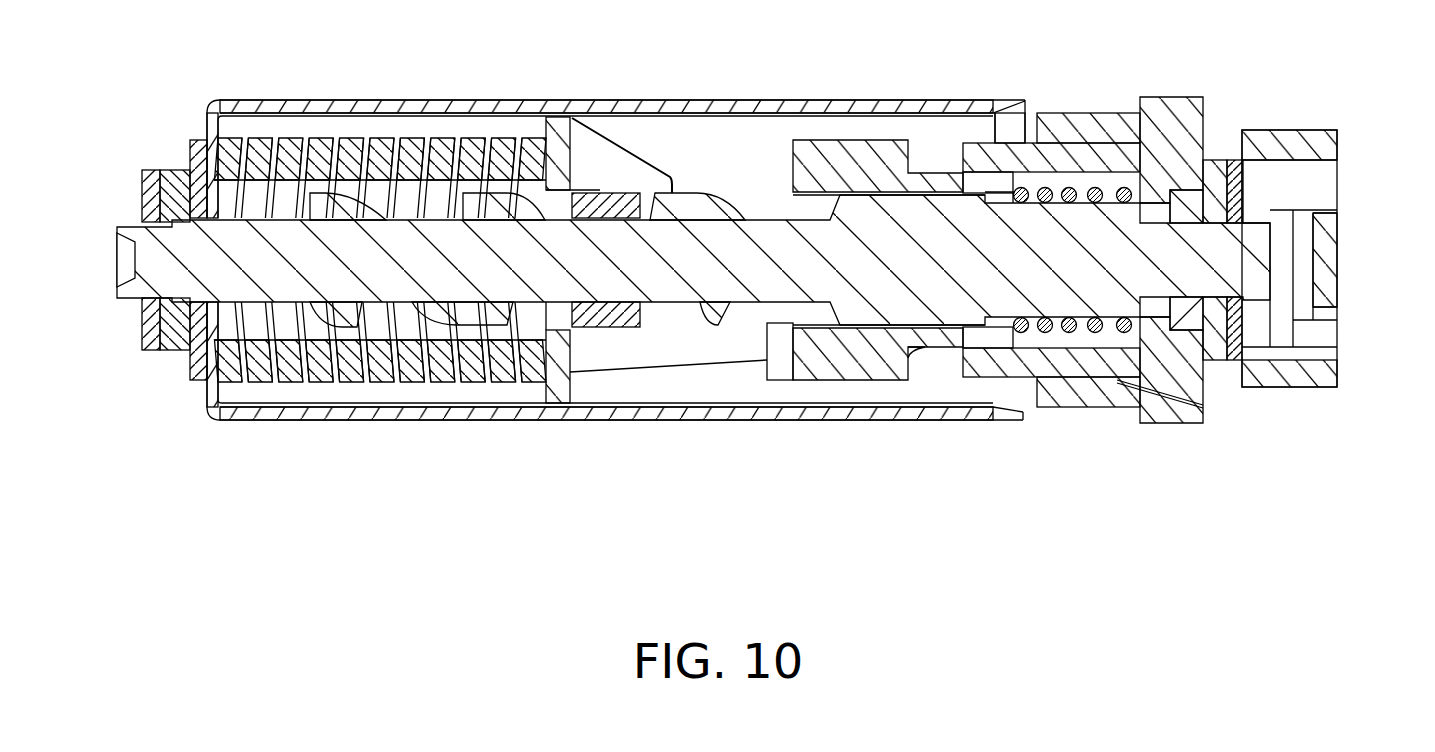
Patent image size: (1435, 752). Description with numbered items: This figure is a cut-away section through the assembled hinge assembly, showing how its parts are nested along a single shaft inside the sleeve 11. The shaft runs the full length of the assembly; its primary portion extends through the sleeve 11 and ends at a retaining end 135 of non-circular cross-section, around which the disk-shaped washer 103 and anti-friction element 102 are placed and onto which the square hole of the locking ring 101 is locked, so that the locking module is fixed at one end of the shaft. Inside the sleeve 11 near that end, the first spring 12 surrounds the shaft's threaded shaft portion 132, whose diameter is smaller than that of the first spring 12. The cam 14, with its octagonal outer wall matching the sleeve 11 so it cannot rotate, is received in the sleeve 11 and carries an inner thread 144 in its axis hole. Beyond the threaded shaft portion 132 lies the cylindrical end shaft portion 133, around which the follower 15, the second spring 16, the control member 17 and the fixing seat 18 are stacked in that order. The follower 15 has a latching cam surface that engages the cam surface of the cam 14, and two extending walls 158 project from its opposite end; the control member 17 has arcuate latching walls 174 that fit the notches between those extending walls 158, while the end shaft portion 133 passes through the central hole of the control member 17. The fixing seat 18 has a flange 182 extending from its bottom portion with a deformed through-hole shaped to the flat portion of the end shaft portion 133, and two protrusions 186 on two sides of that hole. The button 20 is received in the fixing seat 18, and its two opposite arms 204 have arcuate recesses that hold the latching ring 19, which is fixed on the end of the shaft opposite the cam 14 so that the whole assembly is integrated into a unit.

The sleeve 11 is at (838, 100).
The first spring 12 is at (272, 378).
The cam 14 is at (553, 117).
The follower 15 is at (832, 380).
The second spring 16 is at (1122, 190).
The control member 17 is at (977, 143).
The fixing seat 18 is at (1177, 424).
The latching ring 19 is at (1242, 162).
The button 20 is at (1337, 387).
The locking ring 101 is at (147, 183).
The anti-friction element 102 is at (170, 338).
The washer 103 is at (198, 373).
The threaded shaft portion 132 is at (685, 205).
The end shaft portion 133 is at (1088, 230).
The retaining end 135 is at (126, 290).
The inner thread 144 is at (603, 200).
The extending walls 158 is at (962, 333).
The latching walls 174 is at (1043, 358).
The flange 182 is at (1217, 205).
The protrusions 186 is at (1237, 307).
The arms 204 is at (1297, 377).